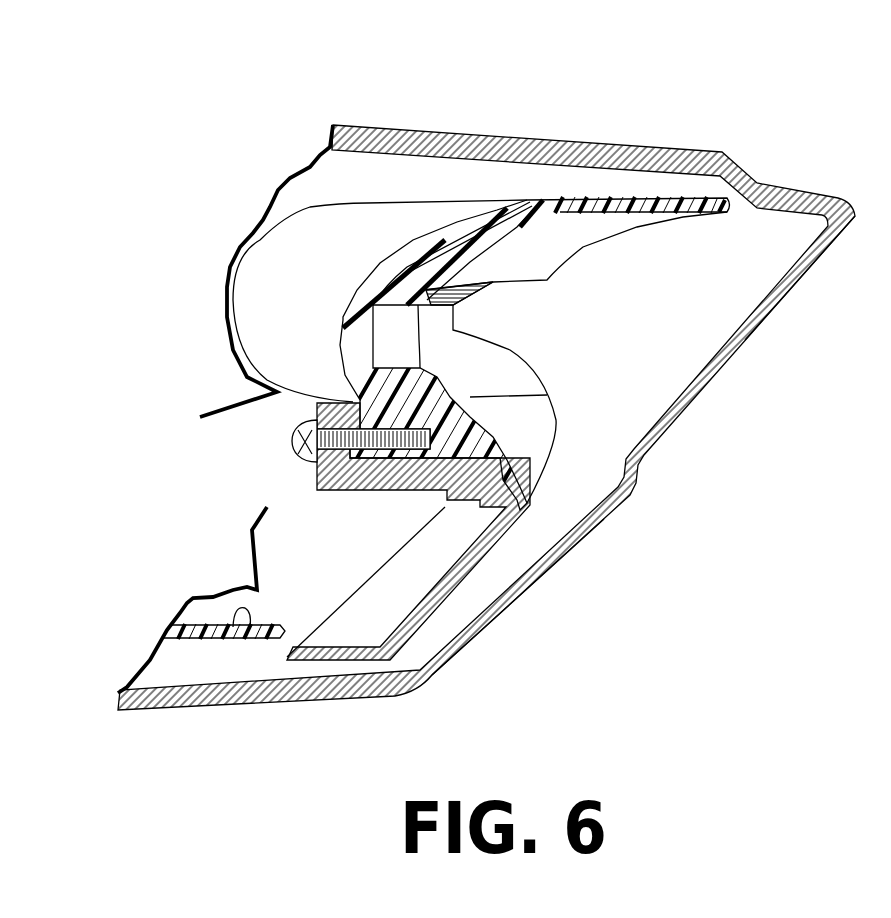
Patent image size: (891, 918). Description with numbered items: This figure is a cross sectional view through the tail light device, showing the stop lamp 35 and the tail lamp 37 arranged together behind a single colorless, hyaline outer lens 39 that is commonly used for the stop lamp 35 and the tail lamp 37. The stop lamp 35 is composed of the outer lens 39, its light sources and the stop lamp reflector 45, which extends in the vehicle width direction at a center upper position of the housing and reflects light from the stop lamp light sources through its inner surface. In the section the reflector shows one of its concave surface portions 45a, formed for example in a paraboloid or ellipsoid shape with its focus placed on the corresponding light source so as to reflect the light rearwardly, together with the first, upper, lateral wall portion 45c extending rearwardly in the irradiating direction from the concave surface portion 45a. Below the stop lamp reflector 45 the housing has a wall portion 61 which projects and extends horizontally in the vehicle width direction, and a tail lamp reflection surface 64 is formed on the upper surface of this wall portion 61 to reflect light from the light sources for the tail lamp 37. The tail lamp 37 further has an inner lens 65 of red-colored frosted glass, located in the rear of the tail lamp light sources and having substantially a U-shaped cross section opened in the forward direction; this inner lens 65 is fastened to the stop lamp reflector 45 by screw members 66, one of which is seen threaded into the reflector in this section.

The stop lamp 35 is at (740, 395).
The tail lamp 37 is at (482, 637).
The outer lens 39 is at (760, 333).
The stop lamp reflector 45 is at (506, 287).
The concave surface portion 45a is at (410, 272).
The first lateral wall portion 45c is at (637, 195).
The wall portion 61 is at (205, 640).
The tail lamp reflection surface 64 is at (237, 620).
The inner lens 65 is at (477, 565).
The screw member 66 is at (293, 437).